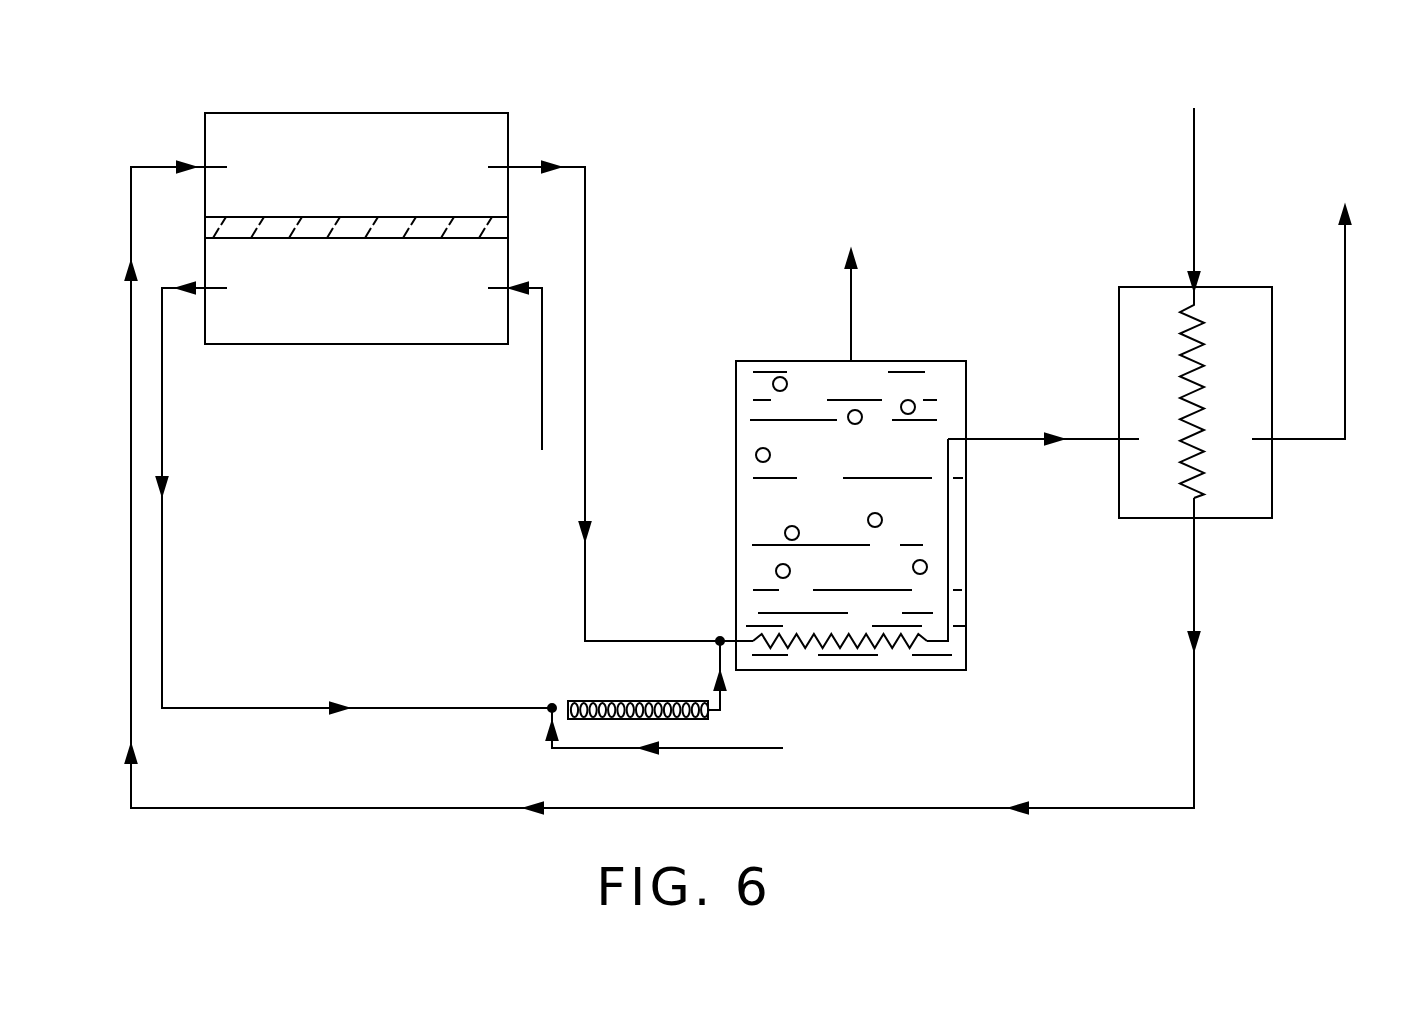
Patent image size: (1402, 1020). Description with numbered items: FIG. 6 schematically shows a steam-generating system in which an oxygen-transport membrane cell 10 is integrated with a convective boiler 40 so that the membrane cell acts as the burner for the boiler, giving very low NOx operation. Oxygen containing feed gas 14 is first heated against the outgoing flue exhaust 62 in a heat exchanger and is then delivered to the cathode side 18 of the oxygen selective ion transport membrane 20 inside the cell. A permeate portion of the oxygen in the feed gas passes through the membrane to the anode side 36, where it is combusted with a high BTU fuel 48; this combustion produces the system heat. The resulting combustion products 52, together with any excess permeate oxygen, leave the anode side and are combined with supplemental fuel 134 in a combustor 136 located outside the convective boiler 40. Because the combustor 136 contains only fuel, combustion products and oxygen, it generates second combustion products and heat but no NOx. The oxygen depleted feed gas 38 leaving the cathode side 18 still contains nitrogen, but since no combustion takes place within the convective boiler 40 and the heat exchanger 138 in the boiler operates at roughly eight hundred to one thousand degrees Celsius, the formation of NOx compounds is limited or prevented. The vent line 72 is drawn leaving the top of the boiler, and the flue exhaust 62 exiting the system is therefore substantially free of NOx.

The oxygen-transport membrane cell 10 is at (305, 100).
The cathode side 18 is at (488, 216).
The oxygen selective ion transport membrane 20 is at (500, 232).
The anode side 36 is at (457, 240).
The oxygen depleted feed gas 38 is at (585, 420).
The high BTU fuel 48 is at (542, 407).
The combustion products 52 is at (162, 432).
The convective boiler 40 is at (757, 336).
The vent line 72 is at (851, 300).
The flue exhaust 62 is at (1078, 441).
The oxygen containing feed gas 14 is at (1194, 187).
The supplemental fuel 134 is at (715, 750).
The combustor 136 is at (612, 700).
The heat exchanger 138 is at (855, 650).